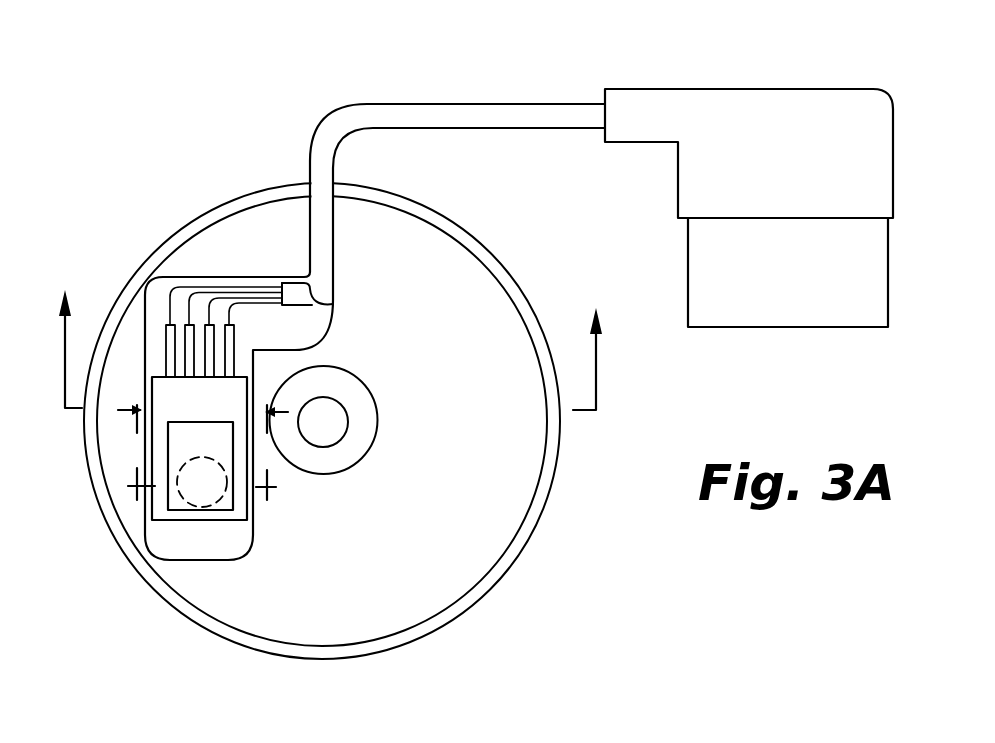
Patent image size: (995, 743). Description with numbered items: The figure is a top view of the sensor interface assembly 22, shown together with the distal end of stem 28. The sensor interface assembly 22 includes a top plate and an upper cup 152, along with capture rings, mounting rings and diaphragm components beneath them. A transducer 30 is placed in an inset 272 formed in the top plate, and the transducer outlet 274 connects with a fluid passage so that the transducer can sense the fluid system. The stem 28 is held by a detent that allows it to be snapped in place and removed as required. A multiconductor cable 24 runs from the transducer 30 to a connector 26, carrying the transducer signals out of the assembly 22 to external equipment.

The sensor interface assembly 22 is at (466, 356).
The multiconductor cable 24 is at (366, 115).
The connector 26 is at (652, 90).
The stem 28 is at (325, 432).
The transducer 30 is at (178, 443).
The upper cup 152 is at (515, 492).
The inset 272 is at (158, 312).
The transducer outlet 274 is at (198, 482).